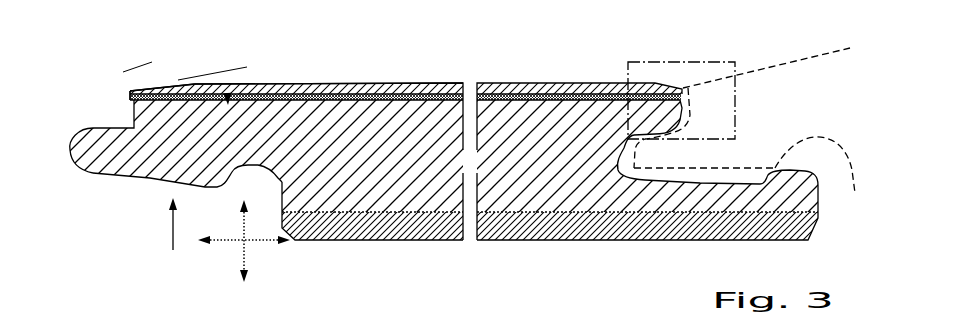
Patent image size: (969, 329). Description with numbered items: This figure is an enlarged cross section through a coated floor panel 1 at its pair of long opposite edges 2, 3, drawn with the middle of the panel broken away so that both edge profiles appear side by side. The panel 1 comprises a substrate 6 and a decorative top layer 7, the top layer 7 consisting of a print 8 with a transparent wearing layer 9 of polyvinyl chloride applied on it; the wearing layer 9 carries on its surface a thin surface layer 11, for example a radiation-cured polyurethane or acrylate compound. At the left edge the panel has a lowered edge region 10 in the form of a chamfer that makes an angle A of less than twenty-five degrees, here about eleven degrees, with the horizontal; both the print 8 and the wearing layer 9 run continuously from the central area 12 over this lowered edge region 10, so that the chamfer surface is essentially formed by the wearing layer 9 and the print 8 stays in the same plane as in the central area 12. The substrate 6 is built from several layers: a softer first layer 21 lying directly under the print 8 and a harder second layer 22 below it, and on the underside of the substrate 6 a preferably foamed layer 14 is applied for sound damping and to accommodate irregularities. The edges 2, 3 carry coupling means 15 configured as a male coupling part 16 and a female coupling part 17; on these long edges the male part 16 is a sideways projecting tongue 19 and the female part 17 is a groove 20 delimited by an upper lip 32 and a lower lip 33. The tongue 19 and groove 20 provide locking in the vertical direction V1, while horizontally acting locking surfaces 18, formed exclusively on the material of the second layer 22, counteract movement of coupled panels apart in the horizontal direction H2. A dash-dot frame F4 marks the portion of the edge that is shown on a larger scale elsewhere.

The coated panel 1 is at (378, 73).
The long opposite edge 2 is at (148, 219).
The long opposite edge 3 is at (715, 157).
The substrate 6 is at (513, 177).
The decorative top layer 7 is at (119, 88).
The print 8 is at (433, 95).
The transparent wearing layer 9 is at (259, 89).
The lowered edge region 10 is at (150, 62).
The surface layer 11 is at (563, 85).
The central area 12 is at (313, 83).
The foamed layer 14 is at (568, 217).
The coupling means 15 is at (172, 239).
The male coupling part 16 is at (161, 152).
The female coupling part 17 is at (633, 168).
The horizontally acting locking surfaces 18 is at (230, 180).
The tongue 19 is at (155, 163).
The groove 20 is at (637, 177).
The first layer 21 is at (500, 97).
The second layer 22 is at (417, 165).
The upper lip 32 is at (648, 117).
The lower lip 33 is at (723, 198).
The angle A is at (228, 93).
The detail area of FIG. 4 F4 is at (675, 63).
The vertical direction V1 is at (249, 232).
The horizontal direction H2 is at (232, 242).